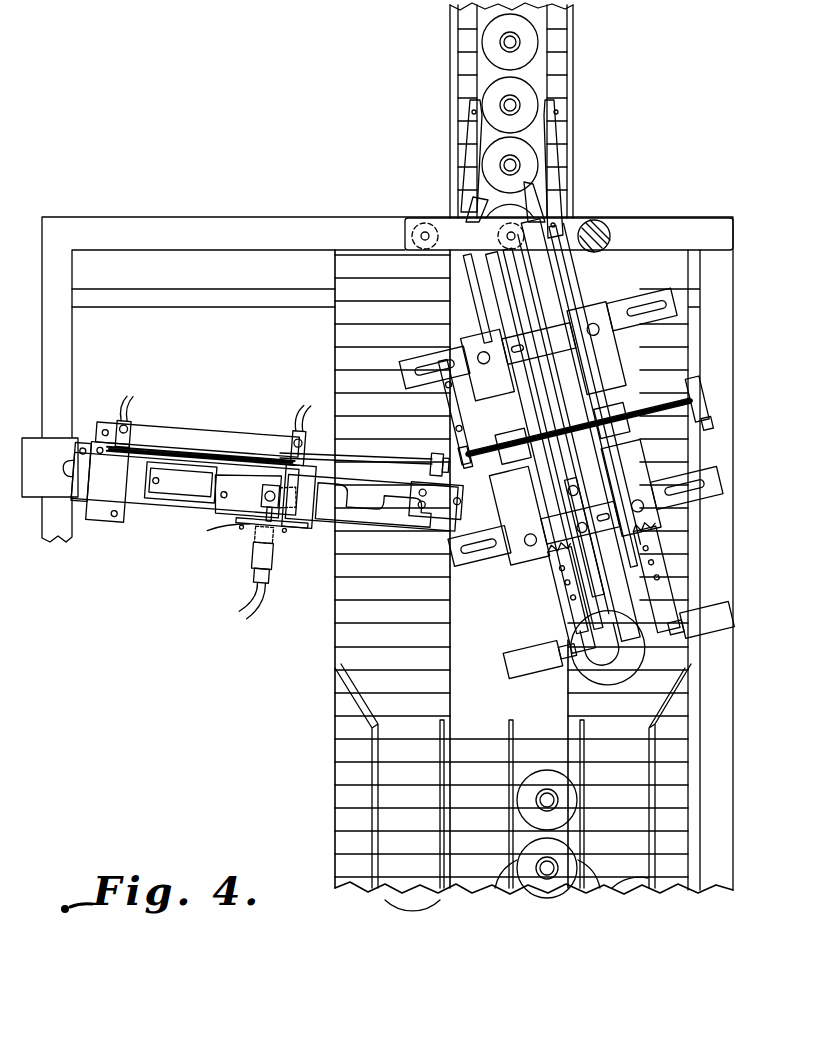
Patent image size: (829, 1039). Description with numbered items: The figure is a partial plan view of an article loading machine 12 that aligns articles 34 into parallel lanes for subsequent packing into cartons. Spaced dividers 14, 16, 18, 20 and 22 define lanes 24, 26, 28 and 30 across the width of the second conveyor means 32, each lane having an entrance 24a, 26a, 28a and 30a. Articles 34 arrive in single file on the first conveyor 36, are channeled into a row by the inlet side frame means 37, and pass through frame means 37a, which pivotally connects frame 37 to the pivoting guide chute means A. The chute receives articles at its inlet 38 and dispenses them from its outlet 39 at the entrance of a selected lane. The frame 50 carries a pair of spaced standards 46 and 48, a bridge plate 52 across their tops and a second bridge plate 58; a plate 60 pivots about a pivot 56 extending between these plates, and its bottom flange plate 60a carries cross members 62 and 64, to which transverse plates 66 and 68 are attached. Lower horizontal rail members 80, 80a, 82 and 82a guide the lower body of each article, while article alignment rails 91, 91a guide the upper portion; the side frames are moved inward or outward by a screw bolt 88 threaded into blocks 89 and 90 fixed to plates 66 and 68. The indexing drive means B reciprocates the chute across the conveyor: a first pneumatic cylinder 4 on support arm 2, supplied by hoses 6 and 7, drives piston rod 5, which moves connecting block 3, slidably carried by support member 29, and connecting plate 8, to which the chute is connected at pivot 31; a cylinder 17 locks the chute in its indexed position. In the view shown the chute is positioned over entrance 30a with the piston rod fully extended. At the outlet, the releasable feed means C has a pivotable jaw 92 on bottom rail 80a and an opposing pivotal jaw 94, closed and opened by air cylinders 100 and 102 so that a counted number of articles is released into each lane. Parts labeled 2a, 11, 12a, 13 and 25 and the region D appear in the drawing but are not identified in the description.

The support arm 2 is at (50, 442).
The carriage plate 2a is at (96, 540).
The connecting block 3 is at (383, 516).
The first pneumatic cylinder 4 is at (210, 425).
The piston drive rod 5 is at (372, 458).
The hose 6 is at (125, 398).
The hose 7 is at (290, 422).
The connecting plate 8 is at (446, 520).
The guide member 11 is at (353, 514).
The article loading machine 12 is at (742, 471).
The frame post 12a is at (55, 530).
The slot 13 is at (410, 526).
The divider 14 is at (372, 802).
The divider 16 is at (417, 888).
The cylinder 17 is at (255, 562).
The divider 18 is at (479, 888).
The divider 20 is at (606, 886).
The divider 22 is at (640, 890).
The lane 24 is at (402, 887).
The entrance 24a is at (382, 762).
The bracket 25 is at (226, 520).
The lane 26 is at (470, 888).
The entrance 26a is at (456, 762).
The lane 28 is at (538, 890).
The entrance 28a is at (521, 762).
The support member 29 is at (116, 528).
The lane 30 is at (625, 890).
The entrance 30a is at (598, 762).
The pivot 31 is at (410, 470).
The second conveyor means 32 is at (345, 332).
The articles 34 is at (528, 157).
The first conveyor 36 is at (562, 78).
The inlet side frame means 37 is at (476, 54).
The frame means 37a is at (468, 172).
The inlet 38 is at (436, 208).
The outlet 39 is at (592, 684).
The standard 46 is at (430, 226).
The standard 48 is at (600, 222).
The frame 50 is at (692, 232).
The bridge plate 52 is at (412, 233).
The pivot 56 is at (512, 226).
The second bridge plate 58 is at (470, 260).
The plate 60 is at (530, 395).
The bottom flange plate 60a is at (640, 390).
The cross member 62 is at (402, 390).
The cross member 64 is at (456, 562).
The transverse plate 66 is at (508, 497).
The transverse plate 68 is at (622, 479).
The lower horizontal rail member 80 is at (490, 308).
The lower horizontal rail member 80a is at (546, 566).
The lower horizontal rail member 82 is at (566, 290).
The lower horizontal rail member 82a is at (722, 540).
The screw bolt 88 is at (655, 415).
The block 89 is at (502, 456).
The block 90 is at (603, 434).
The article alignment rail 91 is at (497, 282).
The article alignment rail 91a is at (545, 278).
The pivotable jaw 92 is at (592, 673).
The pivotal jaw 94 is at (657, 660).
The air cylinder 100 is at (522, 652).
The air cylinder 102 is at (726, 628).
The pivoting guide chute means A is at (672, 374).
The indexing drive means B is at (168, 374).
The releasable feed means C is at (720, 655).
The assembly D is at (290, 428).